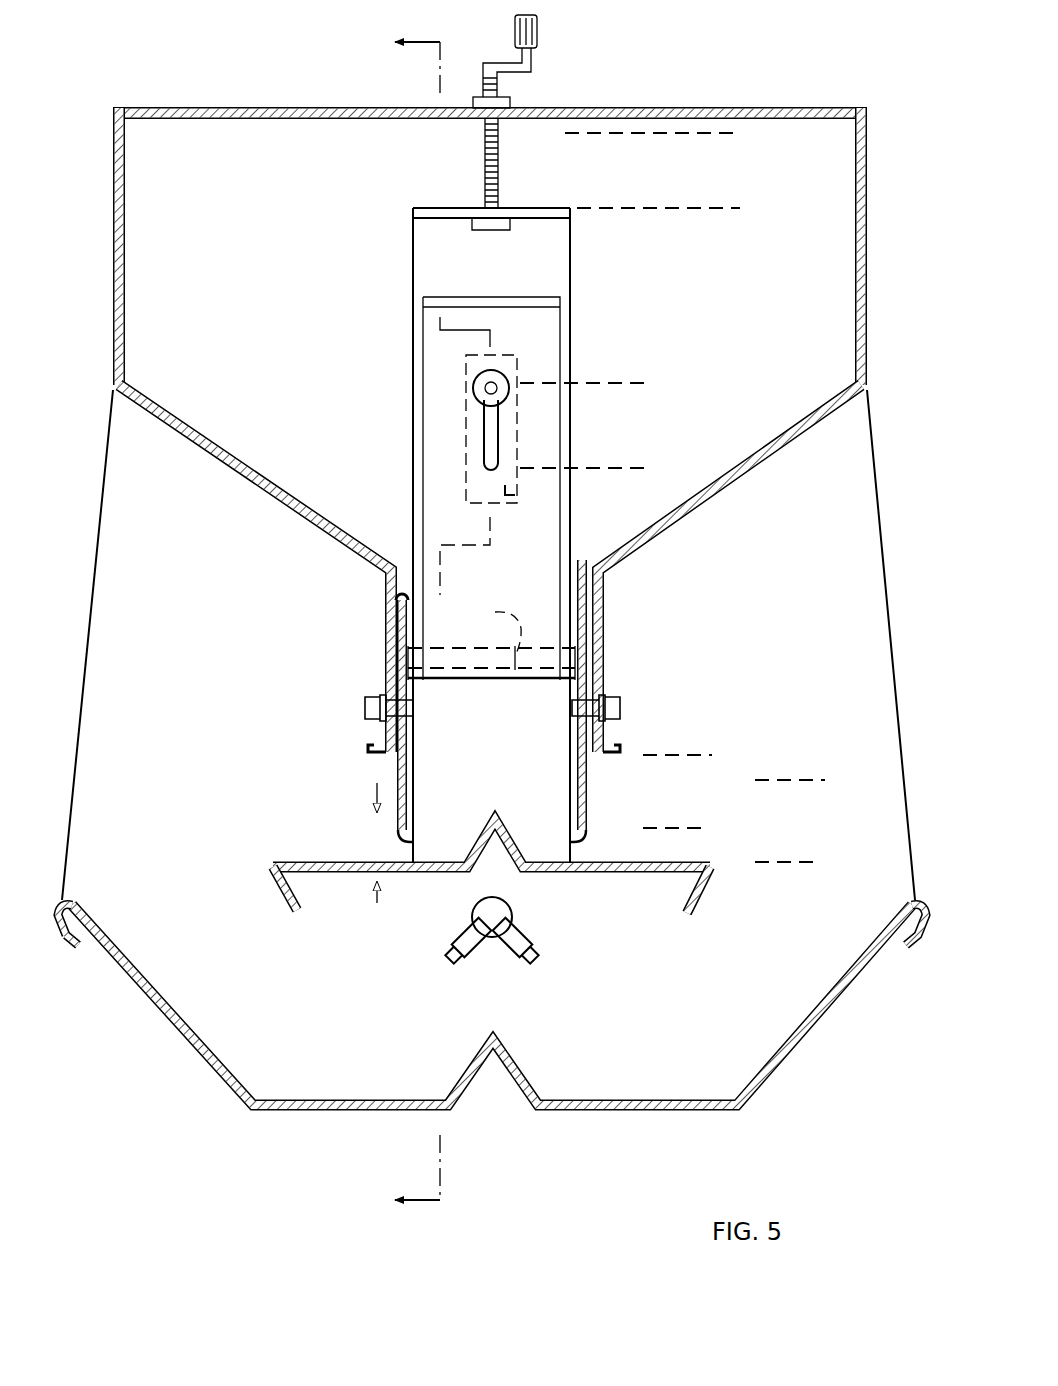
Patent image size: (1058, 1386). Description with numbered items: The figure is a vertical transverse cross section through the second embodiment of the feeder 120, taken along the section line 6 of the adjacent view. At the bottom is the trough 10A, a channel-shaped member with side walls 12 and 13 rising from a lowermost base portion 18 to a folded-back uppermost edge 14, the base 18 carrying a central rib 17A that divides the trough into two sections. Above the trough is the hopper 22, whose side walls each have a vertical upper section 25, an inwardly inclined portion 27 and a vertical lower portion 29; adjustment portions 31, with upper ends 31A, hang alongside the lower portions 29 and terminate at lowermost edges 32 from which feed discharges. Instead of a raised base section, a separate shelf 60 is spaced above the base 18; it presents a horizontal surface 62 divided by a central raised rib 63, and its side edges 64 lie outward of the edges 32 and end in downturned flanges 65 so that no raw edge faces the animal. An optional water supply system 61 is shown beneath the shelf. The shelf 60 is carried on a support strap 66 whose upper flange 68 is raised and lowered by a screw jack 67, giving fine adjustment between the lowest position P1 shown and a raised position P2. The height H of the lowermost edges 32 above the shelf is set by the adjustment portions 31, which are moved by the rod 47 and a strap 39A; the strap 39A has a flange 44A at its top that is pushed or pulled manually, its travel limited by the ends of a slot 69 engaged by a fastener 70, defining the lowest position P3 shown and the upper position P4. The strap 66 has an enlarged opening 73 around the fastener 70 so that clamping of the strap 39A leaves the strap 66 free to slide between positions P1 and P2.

The section line 6- 6 is at (399, 623).
The trough 10A is at (617, 1088).
The side wall 12 is at (167, 1030).
The side wall 13 is at (818, 1015).
The uppermost edge 14 is at (75, 905).
The central rib 17A is at (493, 1032).
The base 18 is at (372, 1100).
The hopper 22 is at (703, 521).
The vertical upper section 25 is at (127, 335).
The inclined portion 27 is at (278, 505).
The vertical lower portion 29 is at (400, 665).
The adjustment portion 31 is at (397, 765).
The gate strip top 31A is at (390, 598).
The lowermost edge 32 is at (408, 838).
The strap 39A is at (540, 424).
The flange 44A is at (545, 300).
The rod 47 is at (492, 628).
The shelf 60 is at (443, 888).
The water supply system 61 is at (525, 918).
The horizontal surface 62 is at (362, 870).
The central raised rib 63 is at (497, 818).
The side edge 64 is at (268, 866).
The downturned flange 65 is at (290, 905).
The support strap 66 is at (450, 245).
The screw jack 67 is at (520, 94).
The upper flange 68 is at (440, 208).
The slot 69 is at (488, 437).
The fastener 70 is at (482, 386).
The enlarged opening 73 is at (545, 500).
The feeder housing 120 is at (185, 758).
The height H is at (378, 843).
The lowest shelf position P1 is at (722, 537).
The raised shelf position P2 is at (716, 460).
The lowest edge position P3 is at (639, 607).
The upper edge position P4 is at (639, 614).